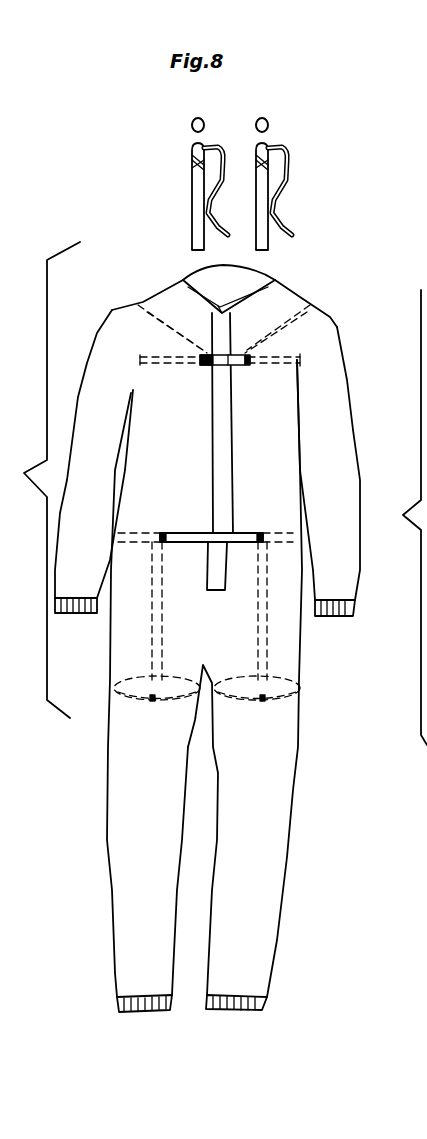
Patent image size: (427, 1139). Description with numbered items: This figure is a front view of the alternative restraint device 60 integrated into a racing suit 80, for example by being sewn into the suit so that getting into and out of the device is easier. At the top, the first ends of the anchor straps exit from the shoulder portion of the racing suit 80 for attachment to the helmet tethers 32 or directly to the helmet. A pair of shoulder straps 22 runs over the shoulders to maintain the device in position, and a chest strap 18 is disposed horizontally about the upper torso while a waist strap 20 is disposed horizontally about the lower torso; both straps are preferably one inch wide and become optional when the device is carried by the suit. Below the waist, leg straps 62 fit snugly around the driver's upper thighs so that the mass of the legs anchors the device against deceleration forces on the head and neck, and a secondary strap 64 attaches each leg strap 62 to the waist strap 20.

The racing suit 80 is at (338, 340).
The chest strap 18 is at (157, 357).
The shoulder straps 22 is at (150, 307).
The helmet tethers 32 is at (193, 220).
The waist strap 20 is at (160, 533).
The secondary strap 64 is at (152, 625).
The leg straps 62 is at (118, 685).
The restraint device 60 is at (217, 493).